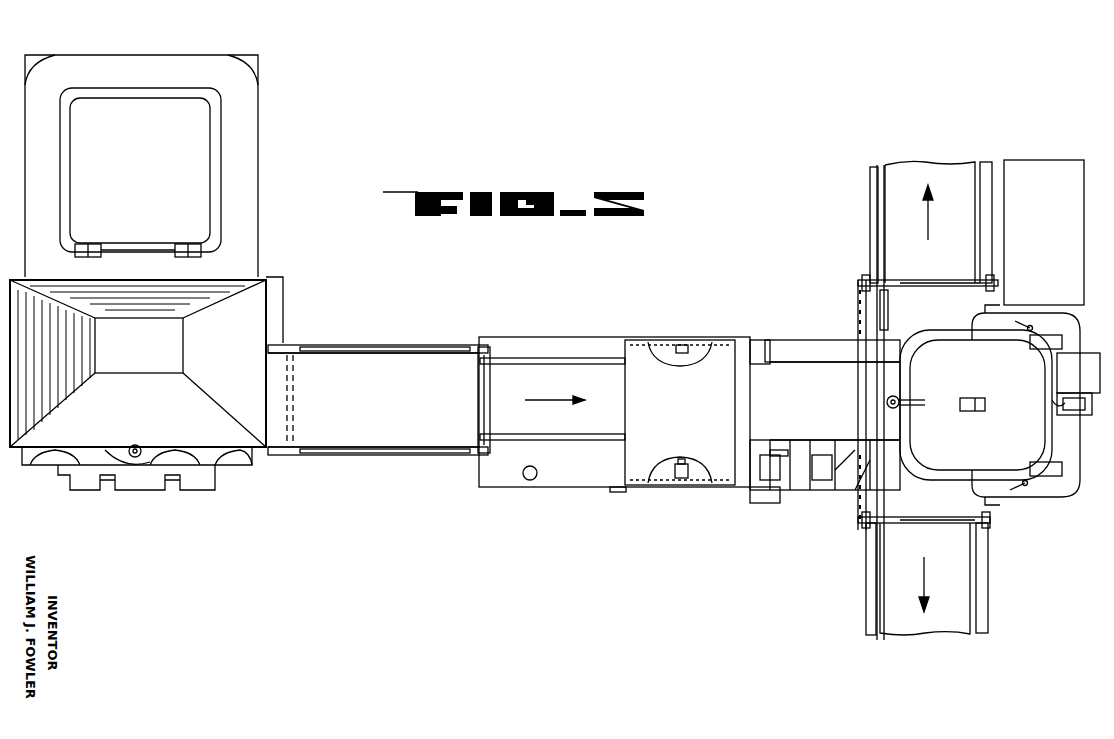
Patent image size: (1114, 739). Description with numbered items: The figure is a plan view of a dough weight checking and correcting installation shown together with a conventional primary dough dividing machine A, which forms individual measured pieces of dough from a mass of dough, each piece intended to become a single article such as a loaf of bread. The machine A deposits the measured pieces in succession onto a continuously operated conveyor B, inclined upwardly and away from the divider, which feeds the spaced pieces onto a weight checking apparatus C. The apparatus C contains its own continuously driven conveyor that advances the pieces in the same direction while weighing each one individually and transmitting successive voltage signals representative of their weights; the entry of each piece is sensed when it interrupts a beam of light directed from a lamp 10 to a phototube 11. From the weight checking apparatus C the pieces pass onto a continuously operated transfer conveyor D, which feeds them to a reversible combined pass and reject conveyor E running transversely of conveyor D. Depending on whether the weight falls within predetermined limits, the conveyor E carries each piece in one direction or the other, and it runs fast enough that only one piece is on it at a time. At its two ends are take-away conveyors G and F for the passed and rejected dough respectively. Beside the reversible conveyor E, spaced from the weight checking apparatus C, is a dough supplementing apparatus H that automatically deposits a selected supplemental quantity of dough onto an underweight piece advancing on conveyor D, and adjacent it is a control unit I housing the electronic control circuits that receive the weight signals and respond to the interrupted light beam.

The primary dough dividing machine A is at (295, 298).
The continuously operated conveyor B is at (399, 367).
The weight checking apparatus C is at (636, 343).
The transfer conveyor D is at (818, 378).
The reversible combined pass and reject conveyor E is at (919, 306).
The take-away conveyor F is at (898, 628).
The take-away conveyor G is at (904, 167).
The dough supplementing apparatus H is at (978, 450).
The control unit I is at (1028, 188).
The lamp 10 is at (680, 480).
The phototube 11 is at (680, 345).